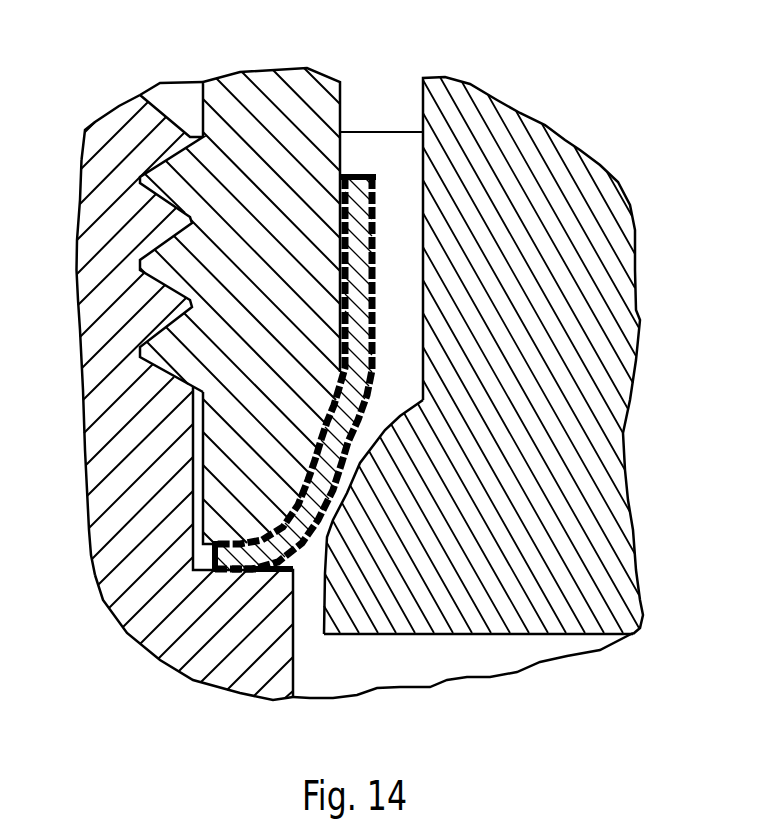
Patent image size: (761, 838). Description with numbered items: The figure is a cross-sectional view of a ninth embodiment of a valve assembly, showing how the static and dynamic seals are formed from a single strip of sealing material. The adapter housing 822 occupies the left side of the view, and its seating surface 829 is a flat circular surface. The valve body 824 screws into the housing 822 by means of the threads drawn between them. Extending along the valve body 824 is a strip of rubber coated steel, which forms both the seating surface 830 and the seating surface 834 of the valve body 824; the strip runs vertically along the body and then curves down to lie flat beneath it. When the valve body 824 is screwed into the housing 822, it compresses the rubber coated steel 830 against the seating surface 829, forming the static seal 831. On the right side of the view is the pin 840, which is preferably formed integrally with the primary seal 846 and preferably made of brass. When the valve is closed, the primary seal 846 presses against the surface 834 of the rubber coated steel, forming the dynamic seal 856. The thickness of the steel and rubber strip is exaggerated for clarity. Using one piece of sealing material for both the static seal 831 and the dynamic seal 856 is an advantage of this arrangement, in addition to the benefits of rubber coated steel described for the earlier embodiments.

The adapter housing 822 is at (95, 587).
The valve body 824 is at (255, 70).
The seating surface 829 is at (197, 563).
The seating surface 830 is at (255, 575).
The static seal 831 is at (197, 643).
The seating surface 834 is at (340, 492).
The pin 840 is at (503, 103).
The primary seal 846 is at (580, 633).
The dynamic seal 856 is at (448, 457).